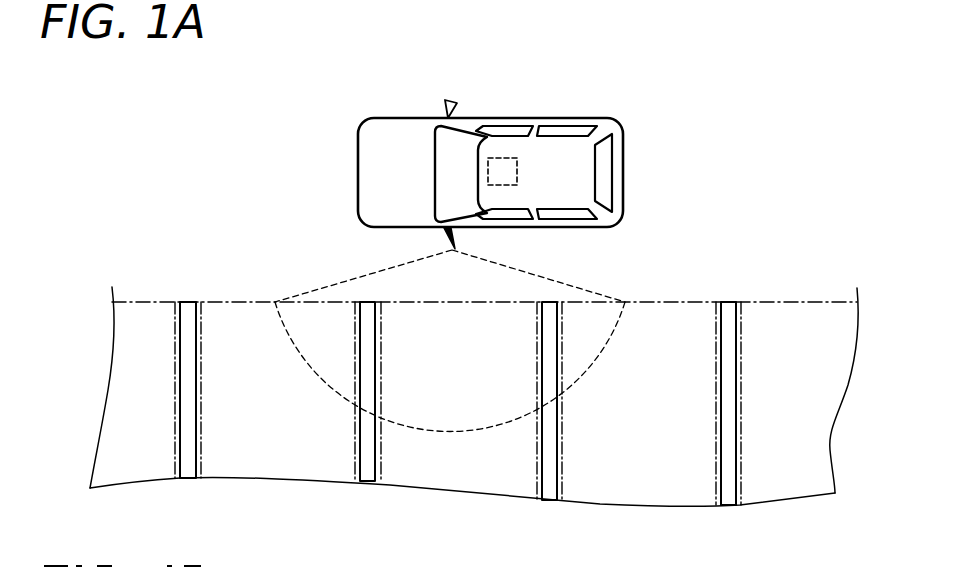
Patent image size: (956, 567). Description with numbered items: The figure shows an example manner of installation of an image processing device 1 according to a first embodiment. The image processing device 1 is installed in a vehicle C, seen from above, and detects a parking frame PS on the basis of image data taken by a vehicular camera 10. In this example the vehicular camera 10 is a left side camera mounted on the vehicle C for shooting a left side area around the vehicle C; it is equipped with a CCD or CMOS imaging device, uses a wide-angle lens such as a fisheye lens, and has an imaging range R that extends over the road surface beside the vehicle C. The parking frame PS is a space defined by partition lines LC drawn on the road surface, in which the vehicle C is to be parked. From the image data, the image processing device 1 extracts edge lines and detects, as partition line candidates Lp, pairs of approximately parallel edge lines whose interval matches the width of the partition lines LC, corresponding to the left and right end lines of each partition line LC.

The image processing device 1 is at (514, 157).
The vehicle C is at (606, 118).
The vehicular camera 10 is at (445, 240).
The imaging range R is at (605, 301).
The parking frame PS is at (413, 301).
The partition line candidates Lp is at (376, 447).
The partition lines LC is at (368, 479).